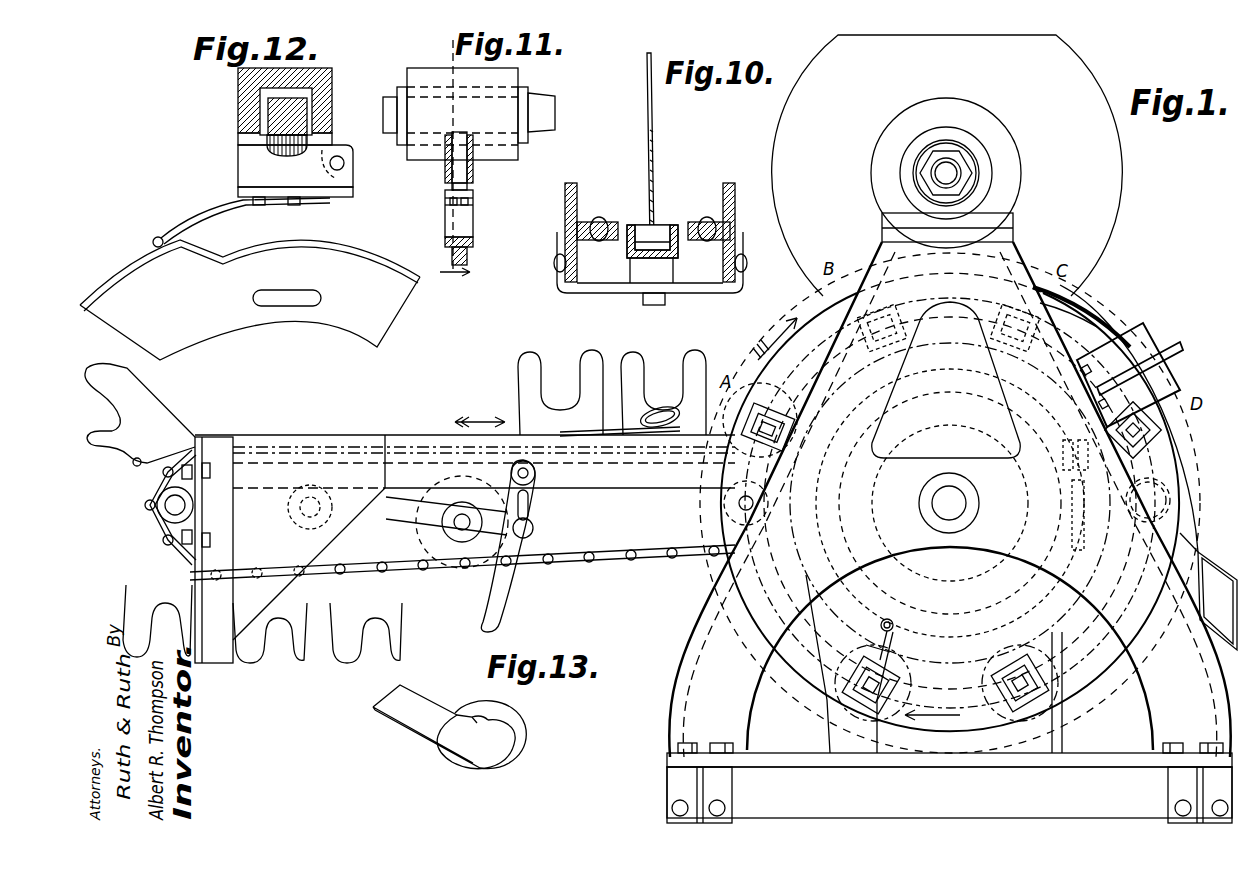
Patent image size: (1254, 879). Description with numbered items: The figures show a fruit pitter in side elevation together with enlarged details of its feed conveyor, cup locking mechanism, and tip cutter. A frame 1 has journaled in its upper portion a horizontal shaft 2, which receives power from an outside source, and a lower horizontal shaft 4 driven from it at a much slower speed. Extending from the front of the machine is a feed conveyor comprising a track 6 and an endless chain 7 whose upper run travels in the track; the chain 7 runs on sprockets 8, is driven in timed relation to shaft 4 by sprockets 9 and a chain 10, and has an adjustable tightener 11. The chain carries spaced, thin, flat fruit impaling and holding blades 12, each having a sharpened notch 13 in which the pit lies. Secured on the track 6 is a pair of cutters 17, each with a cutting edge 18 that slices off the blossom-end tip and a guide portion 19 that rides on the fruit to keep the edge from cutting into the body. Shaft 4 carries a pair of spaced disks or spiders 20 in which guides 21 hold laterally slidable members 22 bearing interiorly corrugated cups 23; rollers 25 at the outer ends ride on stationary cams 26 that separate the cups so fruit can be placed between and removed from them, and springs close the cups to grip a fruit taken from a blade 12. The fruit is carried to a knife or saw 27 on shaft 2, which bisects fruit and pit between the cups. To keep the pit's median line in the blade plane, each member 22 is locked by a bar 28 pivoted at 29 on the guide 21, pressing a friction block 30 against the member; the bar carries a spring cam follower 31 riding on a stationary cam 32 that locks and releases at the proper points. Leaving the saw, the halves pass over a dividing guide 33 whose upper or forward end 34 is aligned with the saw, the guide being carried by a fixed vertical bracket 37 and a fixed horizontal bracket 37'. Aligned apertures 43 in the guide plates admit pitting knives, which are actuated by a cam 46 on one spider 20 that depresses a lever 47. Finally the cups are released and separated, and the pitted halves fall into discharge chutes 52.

In FIG. 1, the frame 1 is at (949, 518).
In FIG. 1, the horizontal shaft 2 is at (942, 170).
In FIG. 1, the second horizontal shaft 4 is at (949, 503).
In FIG. 1, the track 6 is at (418, 432).
In FIG. 10, the track 6 is at (678, 260).
In FIG. 1, the endless chain 7 is at (355, 440).
In FIG. 10, the endless chain 7 is at (655, 235).
In FIG. 1, the sprockets 8 is at (145, 515).
In FIG. 1, the sprockets 9 is at (885, 475).
In FIG. 1, the chain 10 is at (735, 538).
In FIG. 1, the adjustable tightener 11 is at (468, 575).
In FIG. 1, the fruit impaling and holding blades 12 is at (595, 380).
In FIG. 11, the fruit impaling and holding blades 12 is at (454, 169).
In FIG. 10, the fruit impaling and holding blades 12 is at (654, 168).
In FIG. 1, the notch 13 is at (553, 402).
In FIG. 10, the notch 13 is at (653, 137).
In FIG. 1, the cutters 17 is at (640, 440).
In FIG. 13, the cutters 17 is at (410, 712).
In FIG. 13, the cutting edge 18 is at (480, 720).
In FIG. 13, the guide portion 19 is at (490, 706).
In FIG. 1, the disks or spiders 20 is at (1100, 670).
In FIG. 1, the guides 21 is at (850, 700).
In FIG. 12, the guides 21 is at (250, 83).
In FIG. 11, the guides 21 is at (505, 75).
In FIG. 1, the laterally slidable members 22 is at (865, 680).
In FIG. 12, the laterally slidable members 22 is at (280, 108).
In FIG. 11, the laterally slidable members 22 is at (542, 112).
In FIG. 1, the interiorly corrugated cups 23 is at (845, 296).
In FIG. 1, the rollers 25 is at (870, 648).
In FIG. 1, the stationary cams 26 is at (835, 385).
In FIG. 1, the knife or saw 27 is at (1112, 212).
In FIG. 12, the bar 28 is at (252, 168).
In FIG. 11, the bar 28 is at (457, 175).
In FIG. 12, the pivot 29 is at (344, 168).
In FIG. 11, the pivot 29 is at (440, 165).
In FIG. 12, the friction block 30 is at (278, 145).
In FIG. 12, the spring cam follower 31 is at (200, 222).
In FIG. 11, the spring cam follower 31 is at (463, 218).
In FIG. 1, the stationary cam 32 is at (830, 422).
In FIG. 12, the stationary cam 32 is at (228, 252).
In FIG. 11, the stationary cam 32 is at (468, 257).
In FIG. 1, the dividing guide 33 is at (1140, 305).
In FIG. 1, the upper or forward end 34 is at (1075, 298).
In FIG. 1, the fixed vertical bracket 37 is at (1057, 480).
In FIG. 1, the fixed horizontal bracket 37' is at (1145, 353).
In FIG. 1, the aligned apertures 43 is at (1168, 495).
In FIG. 1, the cam 46 is at (862, 510).
In FIG. 1, the lever 47 is at (912, 608).
In FIG. 1, the discharge chutes 52 is at (1208, 591).